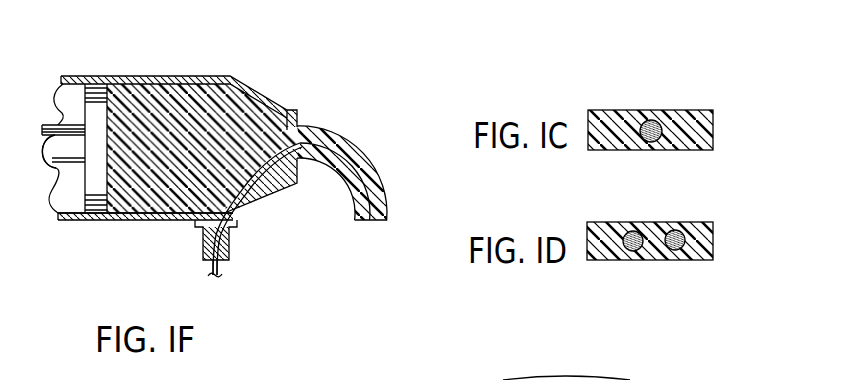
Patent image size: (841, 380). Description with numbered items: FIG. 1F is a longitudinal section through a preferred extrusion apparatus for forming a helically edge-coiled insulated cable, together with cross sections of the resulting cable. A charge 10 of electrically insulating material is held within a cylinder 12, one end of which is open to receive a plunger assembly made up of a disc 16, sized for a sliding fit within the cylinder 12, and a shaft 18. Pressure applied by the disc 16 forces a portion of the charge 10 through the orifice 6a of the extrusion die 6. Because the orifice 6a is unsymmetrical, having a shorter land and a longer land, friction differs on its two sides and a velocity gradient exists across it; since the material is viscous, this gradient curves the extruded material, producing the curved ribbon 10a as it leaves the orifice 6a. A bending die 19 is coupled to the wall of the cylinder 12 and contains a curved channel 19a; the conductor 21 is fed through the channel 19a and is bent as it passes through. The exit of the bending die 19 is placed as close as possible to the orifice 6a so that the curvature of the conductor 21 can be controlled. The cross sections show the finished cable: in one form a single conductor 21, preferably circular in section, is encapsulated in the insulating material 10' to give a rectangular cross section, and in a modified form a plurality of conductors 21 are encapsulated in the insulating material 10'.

In FIG. 1F, the charge 10 is at (174, 126).
In FIG. 1F, the disc 16 is at (96, 87).
In FIG. 1F, the shaft 18 is at (45, 167).
In FIG. 1F, the cylinder 12 is at (158, 214).
In FIG. 1F, the curved ribbon 10a is at (350, 157).
In FIG. 1F, the orifice 6a is at (298, 132).
In FIG. 1F, the extrusion die 6 is at (283, 178).
In FIG. 1F, the bending die 19 is at (230, 238).
In FIG. 1F, the curved channel 19a is at (219, 252).
In FIG. 1F, the conductor 21 is at (215, 278).
In FIG. 1C, the conductor 21 is at (660, 122).
In FIG. 1D, the conductor 21 is at (672, 232).
In FIG. 1C, the insulating material 10' is at (660, 144).
In FIG. 1D, the insulating material 10' is at (667, 257).